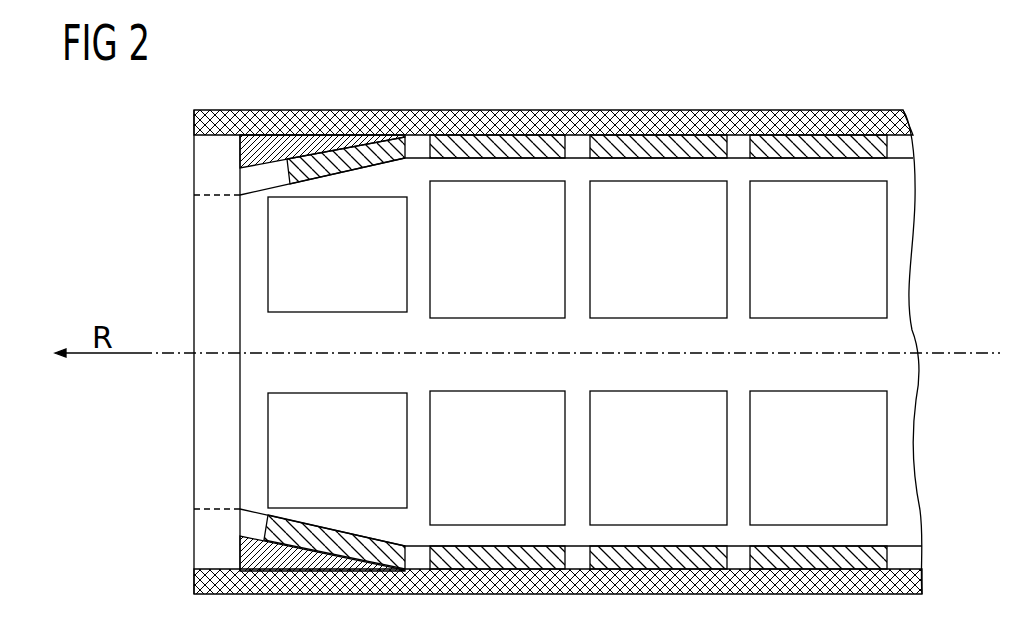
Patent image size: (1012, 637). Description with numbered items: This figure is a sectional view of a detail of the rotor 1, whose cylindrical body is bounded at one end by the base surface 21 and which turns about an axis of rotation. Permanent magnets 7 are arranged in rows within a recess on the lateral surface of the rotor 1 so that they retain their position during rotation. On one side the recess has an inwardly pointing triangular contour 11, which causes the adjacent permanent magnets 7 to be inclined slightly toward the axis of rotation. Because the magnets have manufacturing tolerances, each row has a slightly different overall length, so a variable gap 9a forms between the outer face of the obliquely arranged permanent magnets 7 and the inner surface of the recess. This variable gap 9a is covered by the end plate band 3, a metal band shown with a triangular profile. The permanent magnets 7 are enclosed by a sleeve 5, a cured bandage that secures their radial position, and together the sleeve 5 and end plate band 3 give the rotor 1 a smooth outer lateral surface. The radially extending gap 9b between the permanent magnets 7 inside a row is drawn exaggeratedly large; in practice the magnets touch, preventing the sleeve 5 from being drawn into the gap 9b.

The rotor 1 is at (926, 208).
The end plate band 3 is at (240, 157).
The sleeve 5 is at (204, 110).
The permanent magnets 7 is at (651, 148).
The variable gap 9a is at (265, 177).
The radially extending gap 9b is at (737, 193).
The triangular contour 11 is at (330, 521).
The base surface 21 is at (192, 276).